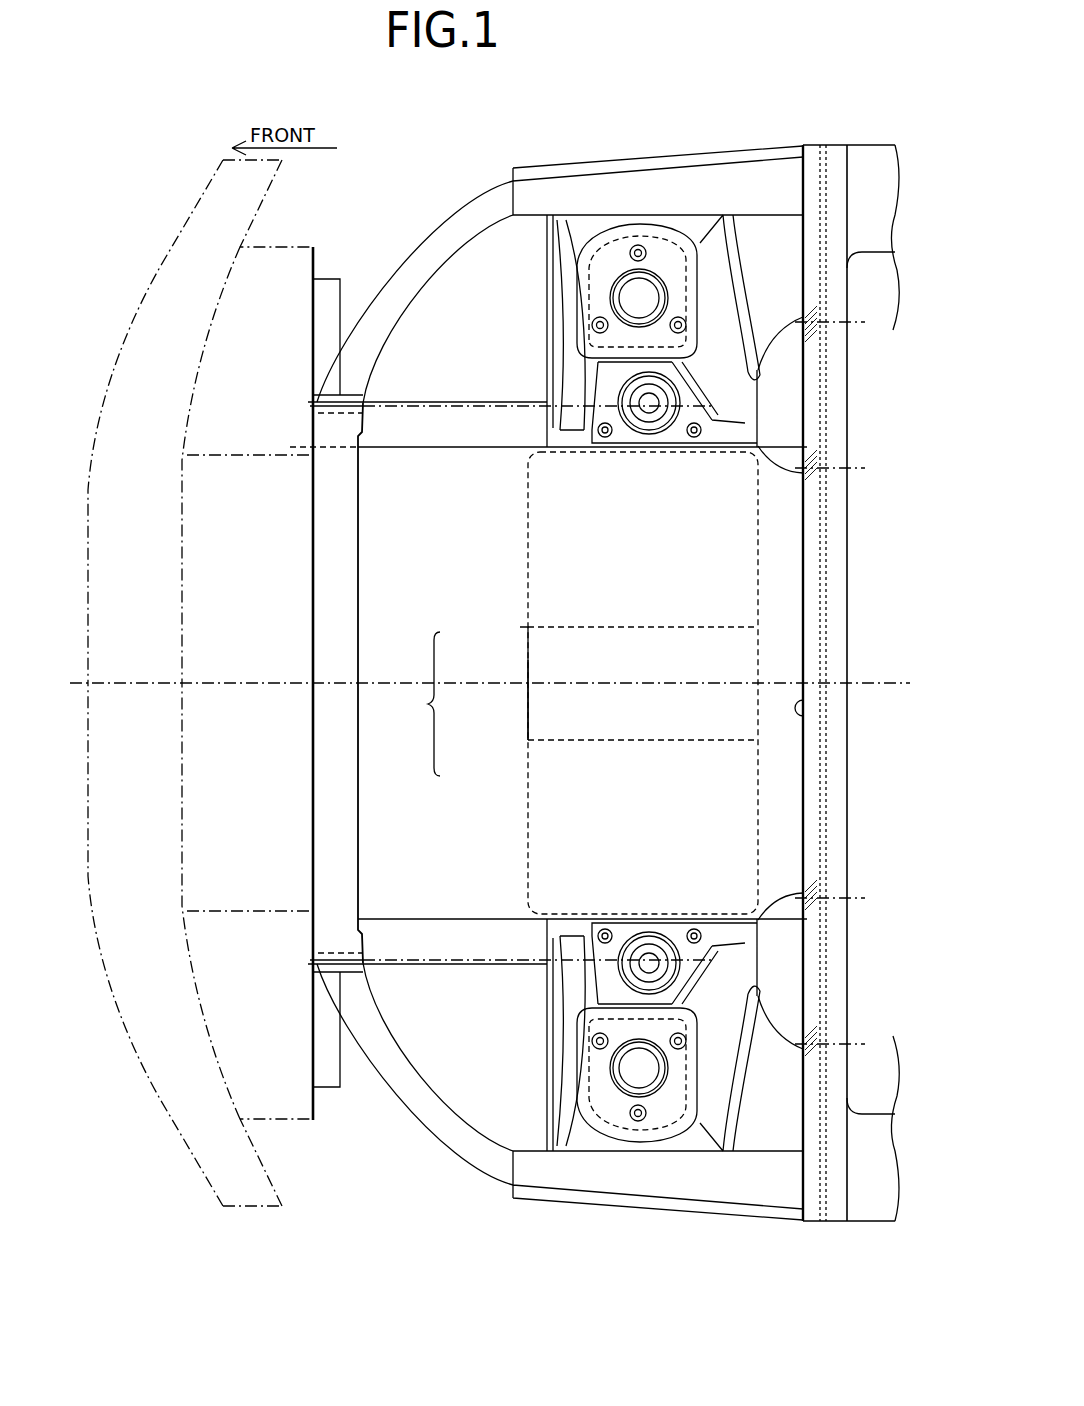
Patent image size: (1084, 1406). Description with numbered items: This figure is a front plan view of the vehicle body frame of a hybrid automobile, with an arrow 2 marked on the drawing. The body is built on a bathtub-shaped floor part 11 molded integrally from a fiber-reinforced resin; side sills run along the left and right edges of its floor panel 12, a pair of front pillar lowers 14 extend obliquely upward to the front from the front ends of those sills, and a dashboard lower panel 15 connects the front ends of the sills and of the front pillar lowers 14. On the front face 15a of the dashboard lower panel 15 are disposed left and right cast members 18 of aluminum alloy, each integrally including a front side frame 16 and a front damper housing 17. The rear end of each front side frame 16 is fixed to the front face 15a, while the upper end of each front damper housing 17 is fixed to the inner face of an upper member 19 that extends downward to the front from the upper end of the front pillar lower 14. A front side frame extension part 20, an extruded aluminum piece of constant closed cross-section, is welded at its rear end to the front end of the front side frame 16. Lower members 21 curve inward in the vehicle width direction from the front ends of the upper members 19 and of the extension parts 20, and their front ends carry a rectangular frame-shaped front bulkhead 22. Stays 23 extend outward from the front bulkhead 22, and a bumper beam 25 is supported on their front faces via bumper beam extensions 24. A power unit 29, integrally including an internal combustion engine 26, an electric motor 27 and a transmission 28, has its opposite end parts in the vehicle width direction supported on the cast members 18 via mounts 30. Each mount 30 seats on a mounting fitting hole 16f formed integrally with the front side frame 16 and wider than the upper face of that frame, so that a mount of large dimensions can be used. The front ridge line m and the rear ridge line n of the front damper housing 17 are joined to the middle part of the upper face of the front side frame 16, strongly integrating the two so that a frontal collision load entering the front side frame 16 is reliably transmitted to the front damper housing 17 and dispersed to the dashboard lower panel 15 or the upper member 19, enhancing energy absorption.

The front vehicle body structure 2 is at (334, 545).
The floor part 11 is at (792, 234).
The floor panel 12 is at (892, 651).
The front pillar lower 14 is at (860, 160).
The dashboard lower panel 15 is at (801, 790).
The front face 15a is at (805, 716).
The front side frame 16 is at (610, 449).
The mounting fitting hole 16f is at (656, 432).
The front damper housing 17 is at (546, 372).
The cast member 18 is at (441, 461).
The upper member 19 is at (632, 182).
The front side frame extension part 20 is at (456, 410).
The lower member 21 is at (422, 247).
The front bulkhead 22 is at (366, 607).
The stay 23 is at (322, 333).
The bumper beam extension 24 is at (288, 246).
The bumper beam 25 is at (145, 295).
The internal combustion engine 26 is at (530, 575).
The electric motor 27 is at (528, 712).
The transmission 28 is at (528, 822).
The power unit 29 is at (419, 704).
The mount 30 is at (705, 375).
The front ridge line m is at (576, 383).
The rear ridge line n is at (703, 385).